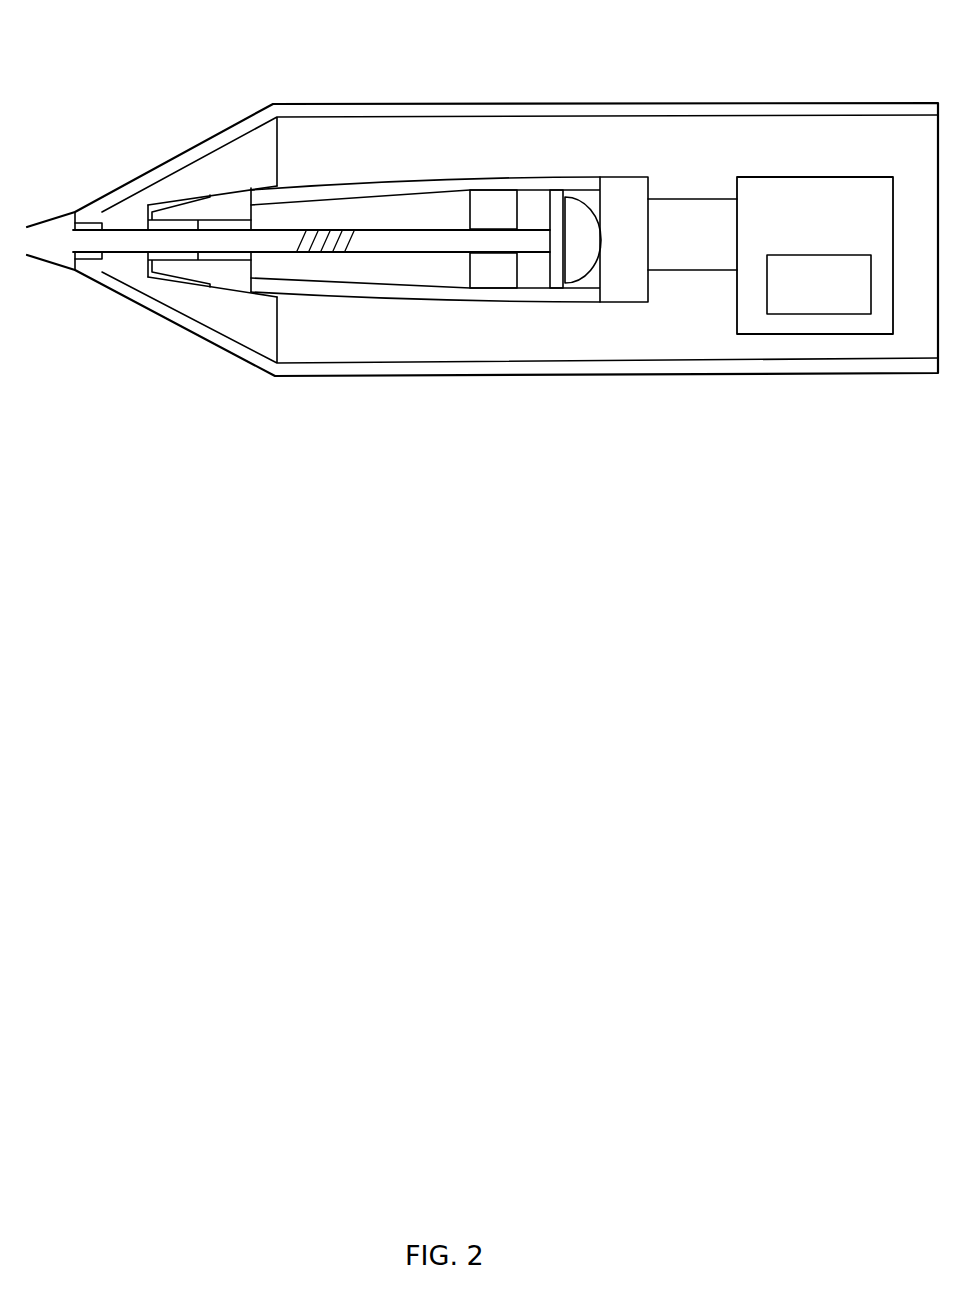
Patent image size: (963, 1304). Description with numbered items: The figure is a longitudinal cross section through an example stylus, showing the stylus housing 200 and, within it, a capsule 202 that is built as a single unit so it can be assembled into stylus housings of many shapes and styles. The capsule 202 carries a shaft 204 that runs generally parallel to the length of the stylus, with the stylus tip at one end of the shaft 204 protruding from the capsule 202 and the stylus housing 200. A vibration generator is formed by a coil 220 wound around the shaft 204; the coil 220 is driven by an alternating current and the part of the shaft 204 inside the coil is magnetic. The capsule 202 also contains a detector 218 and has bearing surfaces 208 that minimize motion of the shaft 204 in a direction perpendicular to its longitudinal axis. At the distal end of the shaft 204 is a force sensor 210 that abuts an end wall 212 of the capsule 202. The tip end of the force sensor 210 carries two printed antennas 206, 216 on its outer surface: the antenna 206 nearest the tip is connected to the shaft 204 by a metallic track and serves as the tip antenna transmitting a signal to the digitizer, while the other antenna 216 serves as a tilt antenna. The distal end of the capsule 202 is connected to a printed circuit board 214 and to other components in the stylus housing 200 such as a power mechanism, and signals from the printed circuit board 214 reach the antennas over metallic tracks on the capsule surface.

The stylus housing 200 is at (668, 107).
The capsule 202 is at (362, 190).
The shaft 204 is at (311, 241).
The printed antenna 206 is at (170, 230).
The bearing surfaces 208 is at (516, 239).
The force sensor 210 is at (583, 243).
The end wall 212 is at (633, 233).
The printed circuit board 214 is at (815, 255).
The printed antenna 216 is at (242, 190).
The detector 218 is at (819, 284).
The coil 220 is at (318, 252).